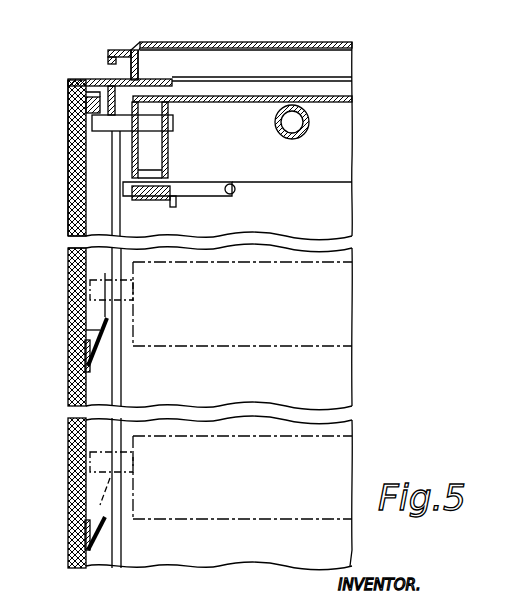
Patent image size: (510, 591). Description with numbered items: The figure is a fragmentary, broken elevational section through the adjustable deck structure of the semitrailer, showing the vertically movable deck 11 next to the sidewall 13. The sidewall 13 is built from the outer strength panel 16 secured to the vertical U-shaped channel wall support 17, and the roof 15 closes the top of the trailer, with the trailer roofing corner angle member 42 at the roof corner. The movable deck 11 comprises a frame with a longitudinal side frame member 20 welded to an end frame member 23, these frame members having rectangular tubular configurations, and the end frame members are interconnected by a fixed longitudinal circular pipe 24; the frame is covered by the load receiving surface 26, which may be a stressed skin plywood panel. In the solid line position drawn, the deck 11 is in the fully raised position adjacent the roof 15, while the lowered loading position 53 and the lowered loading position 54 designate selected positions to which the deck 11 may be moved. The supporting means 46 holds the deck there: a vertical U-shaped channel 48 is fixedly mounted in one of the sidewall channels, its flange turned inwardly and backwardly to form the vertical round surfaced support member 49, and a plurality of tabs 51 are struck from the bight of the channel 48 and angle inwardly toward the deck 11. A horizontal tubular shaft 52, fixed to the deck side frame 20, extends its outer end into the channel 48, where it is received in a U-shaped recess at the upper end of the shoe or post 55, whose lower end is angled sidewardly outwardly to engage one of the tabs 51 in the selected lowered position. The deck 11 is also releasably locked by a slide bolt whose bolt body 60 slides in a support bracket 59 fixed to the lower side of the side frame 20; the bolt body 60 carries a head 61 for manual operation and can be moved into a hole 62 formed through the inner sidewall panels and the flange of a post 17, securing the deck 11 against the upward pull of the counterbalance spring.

The vertically movable deck 11 is at (344, 188).
The sidewall 13 is at (76, 230).
The roof 15 is at (318, 62).
The outer strength panel 16 is at (76, 246).
The channel wall support 17 is at (74, 188).
The longitudinal side frame member 20 is at (170, 150).
The end frame member 23 is at (352, 130).
The longitudinal circular pipe 24 is at (299, 140).
The load receiving surface 26 is at (352, 99).
The roofing corner angle member 42 is at (78, 77).
The supporting means 46 is at (178, 124).
The vertical U-shaped channel 48 is at (82, 143).
The vertical round surfaced support member 49 is at (124, 383).
The tab 51 is at (108, 356).
The horizontal tubular shaft 52 is at (84, 108).
The lowered loading position 53 is at (336, 308).
The lowered loading position 54 is at (336, 460).
The shoe or post 55 is at (88, 334).
The support bracket 59 is at (152, 200).
The bolt body 60 is at (205, 192).
The head 61 is at (236, 190).
The hole 62 is at (112, 210).